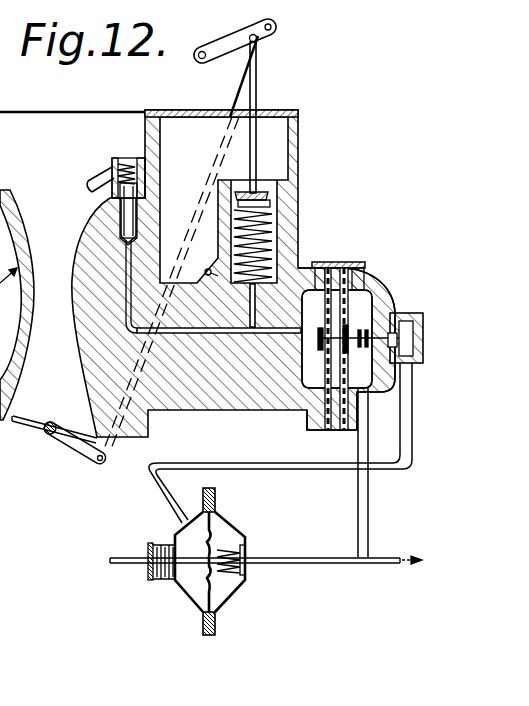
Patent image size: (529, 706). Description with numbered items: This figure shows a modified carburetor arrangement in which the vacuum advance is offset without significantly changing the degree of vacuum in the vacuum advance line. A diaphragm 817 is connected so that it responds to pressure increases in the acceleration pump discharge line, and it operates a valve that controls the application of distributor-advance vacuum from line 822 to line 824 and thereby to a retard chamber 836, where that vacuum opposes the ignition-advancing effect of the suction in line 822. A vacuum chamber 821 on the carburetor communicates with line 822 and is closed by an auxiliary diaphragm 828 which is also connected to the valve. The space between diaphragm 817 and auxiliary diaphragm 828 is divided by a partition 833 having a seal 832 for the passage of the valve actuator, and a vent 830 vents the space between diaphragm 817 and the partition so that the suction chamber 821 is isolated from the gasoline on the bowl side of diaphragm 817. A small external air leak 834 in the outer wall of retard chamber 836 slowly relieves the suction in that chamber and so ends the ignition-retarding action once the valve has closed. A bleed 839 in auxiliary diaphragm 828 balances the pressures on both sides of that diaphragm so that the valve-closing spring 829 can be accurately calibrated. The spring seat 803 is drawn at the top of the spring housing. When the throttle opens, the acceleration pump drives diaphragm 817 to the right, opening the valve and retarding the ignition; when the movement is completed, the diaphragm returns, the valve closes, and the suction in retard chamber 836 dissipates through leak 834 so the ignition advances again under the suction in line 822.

The spring seat 803 is at (268, 203).
The diaphragm 817 is at (317, 297).
The vacuum chamber 821 is at (380, 280).
The vacuum line 822 is at (383, 557).
The line 824 is at (281, 465).
The auxiliary diaphragm 828 is at (368, 300).
The valve-closing spring 829 is at (284, 416).
The vent 830 is at (330, 362).
The seal 832 is at (330, 292).
The partition 833 is at (346, 293).
The external air leak 834 is at (200, 512).
The retard chamber 836 is at (188, 600).
The bleed 839 is at (359, 430).